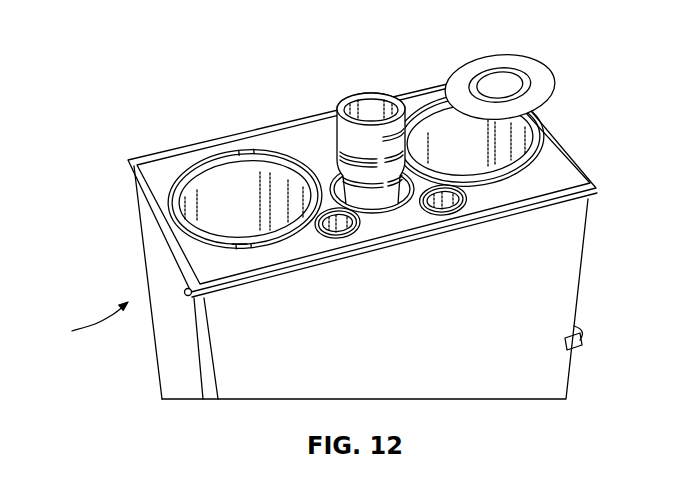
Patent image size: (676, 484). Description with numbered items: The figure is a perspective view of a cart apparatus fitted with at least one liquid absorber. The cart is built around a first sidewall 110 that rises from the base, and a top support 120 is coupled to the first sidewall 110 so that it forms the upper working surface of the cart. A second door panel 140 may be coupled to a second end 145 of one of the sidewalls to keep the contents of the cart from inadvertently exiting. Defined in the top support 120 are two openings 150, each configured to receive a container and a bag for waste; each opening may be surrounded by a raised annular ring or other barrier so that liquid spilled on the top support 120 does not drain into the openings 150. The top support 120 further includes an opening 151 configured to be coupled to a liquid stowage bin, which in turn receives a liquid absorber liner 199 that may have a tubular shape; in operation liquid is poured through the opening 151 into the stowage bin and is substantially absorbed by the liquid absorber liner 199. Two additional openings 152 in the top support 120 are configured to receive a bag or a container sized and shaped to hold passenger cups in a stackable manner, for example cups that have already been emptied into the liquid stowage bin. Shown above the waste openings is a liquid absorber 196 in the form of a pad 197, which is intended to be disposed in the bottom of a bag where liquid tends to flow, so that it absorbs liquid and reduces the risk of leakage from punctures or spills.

The first sidewall 110 is at (352, 282).
The top support 120 is at (172, 160).
The second door panel 140 is at (145, 227).
The second end 145 is at (80, 323).
The opening 150 is at (356, 152).
The opening 151 is at (360, 222).
The opening 152 is at (433, 295).
The liquid absorber 196 is at (518, 70).
The pad 197 is at (541, 78).
The liquid absorber liner 199 is at (338, 108).